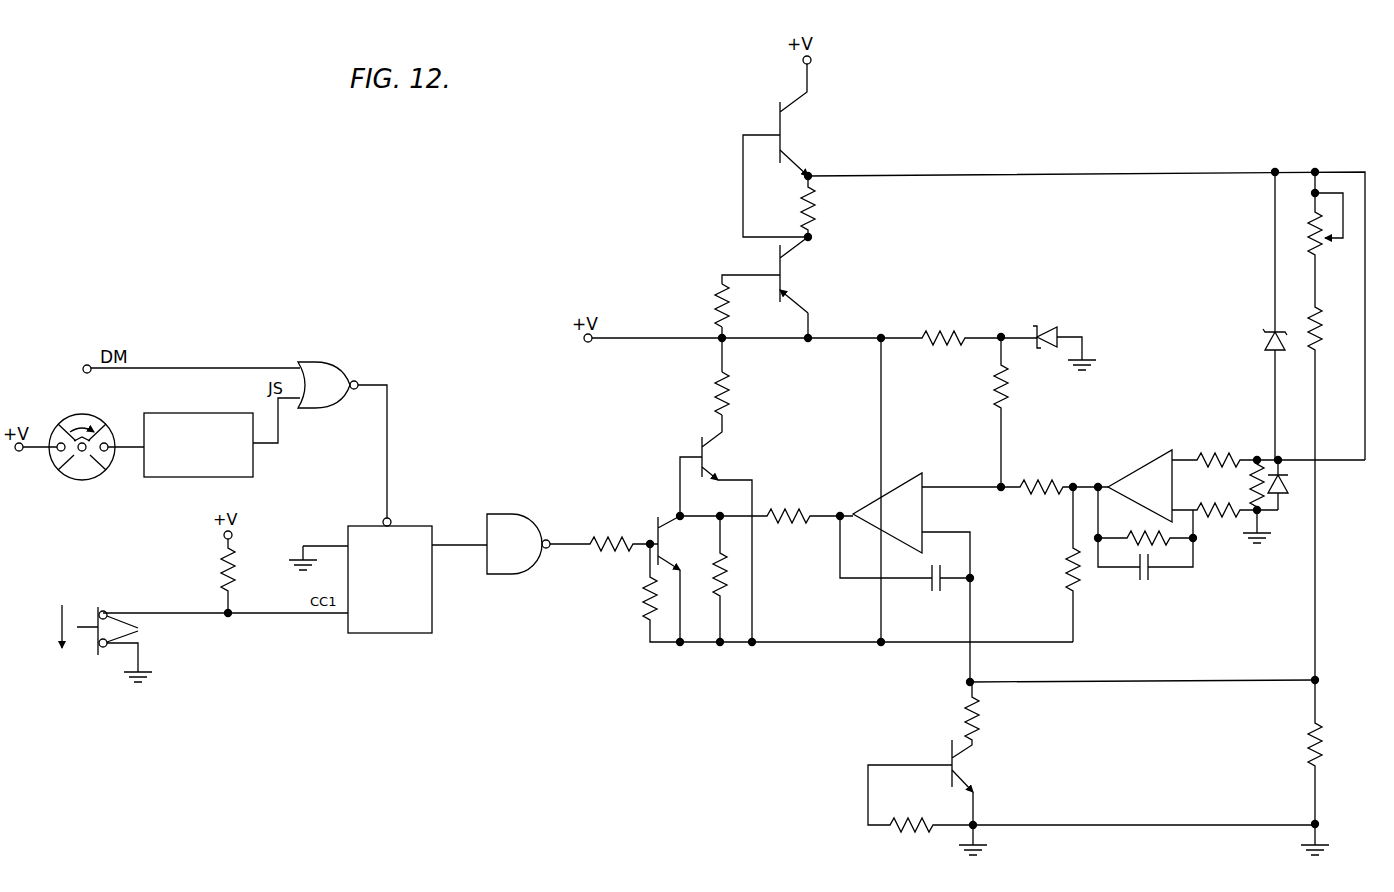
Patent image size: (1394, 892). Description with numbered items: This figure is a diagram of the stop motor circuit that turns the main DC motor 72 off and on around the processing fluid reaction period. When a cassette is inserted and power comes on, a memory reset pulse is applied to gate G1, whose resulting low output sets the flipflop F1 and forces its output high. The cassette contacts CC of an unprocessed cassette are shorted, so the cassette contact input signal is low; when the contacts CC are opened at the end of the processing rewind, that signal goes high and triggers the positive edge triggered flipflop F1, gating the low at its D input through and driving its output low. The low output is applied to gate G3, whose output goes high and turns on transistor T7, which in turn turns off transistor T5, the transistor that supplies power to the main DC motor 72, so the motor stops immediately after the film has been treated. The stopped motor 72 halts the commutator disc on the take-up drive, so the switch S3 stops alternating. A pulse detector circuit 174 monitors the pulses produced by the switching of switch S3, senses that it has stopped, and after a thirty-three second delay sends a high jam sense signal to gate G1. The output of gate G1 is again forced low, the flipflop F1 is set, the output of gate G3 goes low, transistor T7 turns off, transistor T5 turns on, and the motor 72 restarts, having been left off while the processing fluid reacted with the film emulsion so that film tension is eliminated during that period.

The pulse detector circuit 174 is at (198, 445).
The main DC motor 72 is at (1336, 425).
The transistor T5 is at (799, 120).
The transistor T7 is at (669, 543).
The gate G1 is at (328, 385).
The gate G3 is at (518, 544).
The switch S3 is at (82, 459).
The flipflop F1 is at (390, 579).
The cassette contacts CC is at (114, 643).